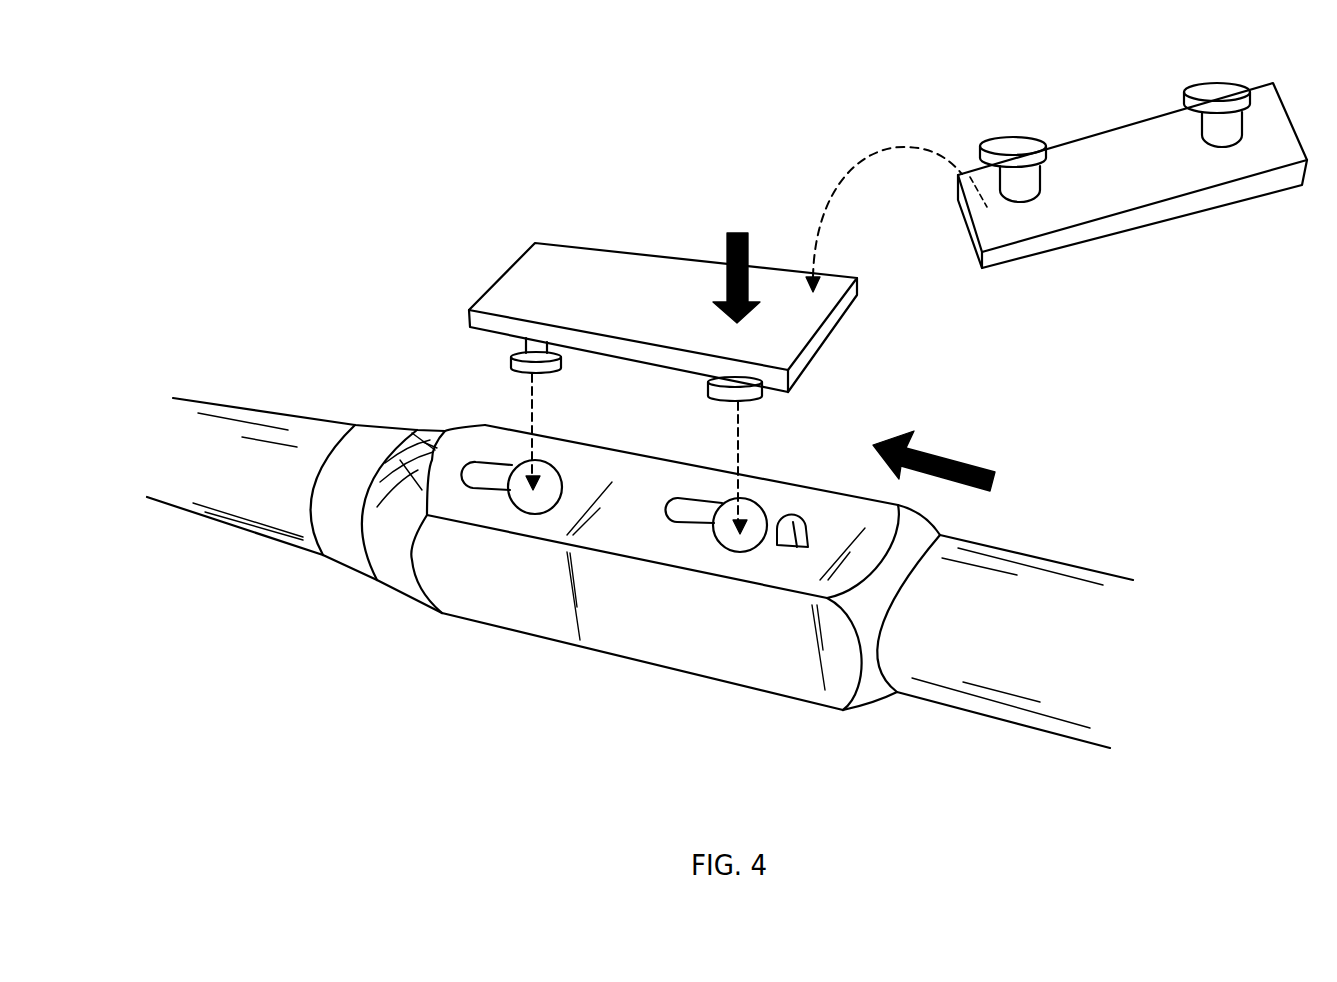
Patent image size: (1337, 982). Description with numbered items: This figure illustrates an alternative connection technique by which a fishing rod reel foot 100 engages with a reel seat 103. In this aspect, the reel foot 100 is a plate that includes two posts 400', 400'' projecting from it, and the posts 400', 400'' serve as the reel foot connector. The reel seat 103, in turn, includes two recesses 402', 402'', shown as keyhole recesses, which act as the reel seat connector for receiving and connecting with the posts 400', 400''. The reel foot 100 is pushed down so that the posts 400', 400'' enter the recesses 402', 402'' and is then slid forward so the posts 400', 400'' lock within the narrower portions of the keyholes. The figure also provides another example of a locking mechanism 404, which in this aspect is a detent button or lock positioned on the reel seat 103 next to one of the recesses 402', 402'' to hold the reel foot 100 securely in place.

The reel foot 100 is at (840, 343).
The reel seat 103 is at (565, 510).
The post 400' is at (1038, 253).
The post 400'' is at (1247, 186).
The recess 402' is at (702, 630).
The recess 402'' is at (453, 569).
The locking mechanism 404 is at (792, 548).